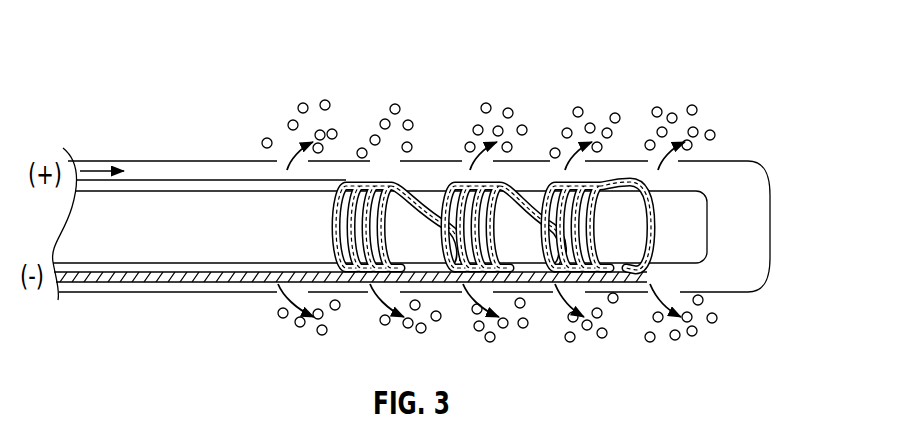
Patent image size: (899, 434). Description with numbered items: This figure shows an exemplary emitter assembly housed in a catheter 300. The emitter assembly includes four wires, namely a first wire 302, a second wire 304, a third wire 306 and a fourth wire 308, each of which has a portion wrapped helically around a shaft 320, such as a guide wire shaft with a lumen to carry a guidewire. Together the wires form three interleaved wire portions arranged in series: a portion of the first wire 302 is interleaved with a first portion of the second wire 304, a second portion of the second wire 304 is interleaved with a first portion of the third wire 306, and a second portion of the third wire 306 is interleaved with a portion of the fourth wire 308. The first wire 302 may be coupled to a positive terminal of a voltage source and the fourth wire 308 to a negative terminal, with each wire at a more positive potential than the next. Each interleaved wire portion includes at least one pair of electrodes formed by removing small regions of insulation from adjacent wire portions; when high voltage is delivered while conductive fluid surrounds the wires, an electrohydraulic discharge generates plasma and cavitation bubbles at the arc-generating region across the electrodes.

The catheter 300 is at (758, 47).
The first wire 302 is at (230, 180).
The second wire 304 is at (353, 170).
The third wire 306 is at (443, 170).
The fourth wire 308 is at (553, 170).
The shaft 320 is at (707, 228).